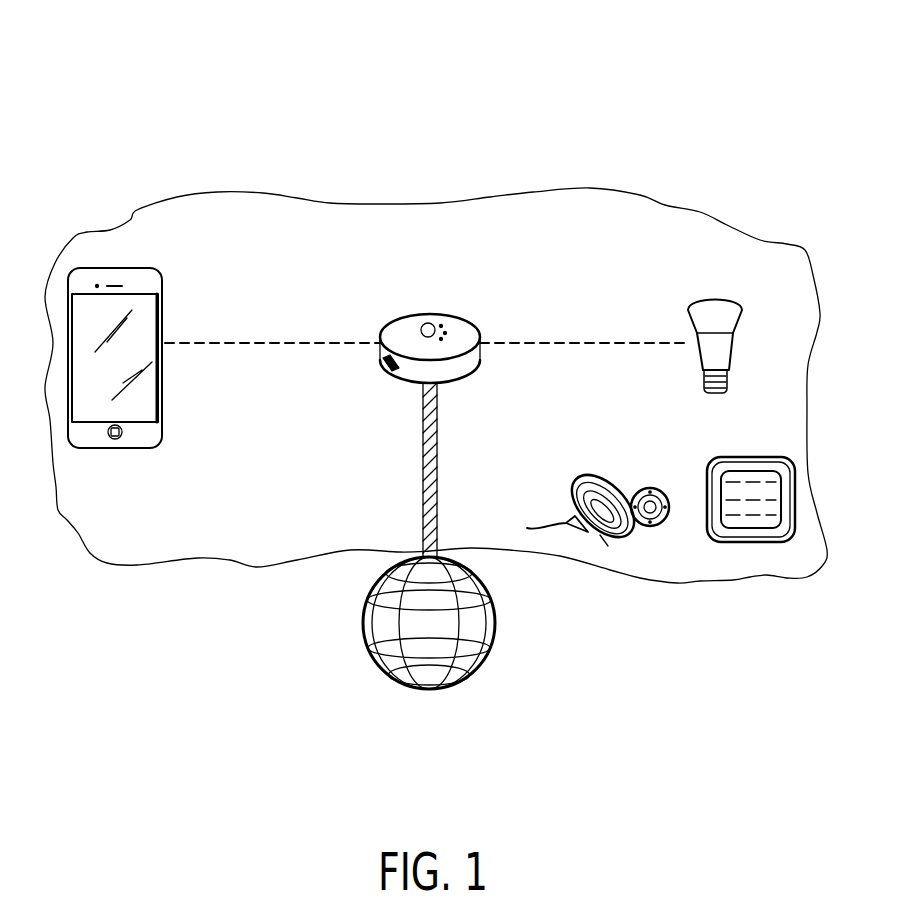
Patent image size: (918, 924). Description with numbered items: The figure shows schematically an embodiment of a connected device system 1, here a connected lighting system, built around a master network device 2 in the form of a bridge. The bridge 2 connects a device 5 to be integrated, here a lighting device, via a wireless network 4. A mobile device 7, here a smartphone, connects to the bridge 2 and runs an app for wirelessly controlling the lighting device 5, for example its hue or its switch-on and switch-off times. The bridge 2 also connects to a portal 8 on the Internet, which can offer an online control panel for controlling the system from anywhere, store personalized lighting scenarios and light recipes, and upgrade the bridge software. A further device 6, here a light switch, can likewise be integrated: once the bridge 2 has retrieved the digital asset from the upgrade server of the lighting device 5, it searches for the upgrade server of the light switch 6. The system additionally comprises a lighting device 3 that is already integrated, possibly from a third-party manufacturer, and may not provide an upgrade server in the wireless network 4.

The connected device system 1 is at (91, 109).
The master network device 2 is at (412, 313).
The lighting device 3 is at (717, 297).
The wireless network 4 is at (682, 583).
The device to be integrated 5 is at (606, 535).
The further device 6 is at (748, 542).
The mobile device 7 is at (100, 268).
The portal 8 is at (445, 690).